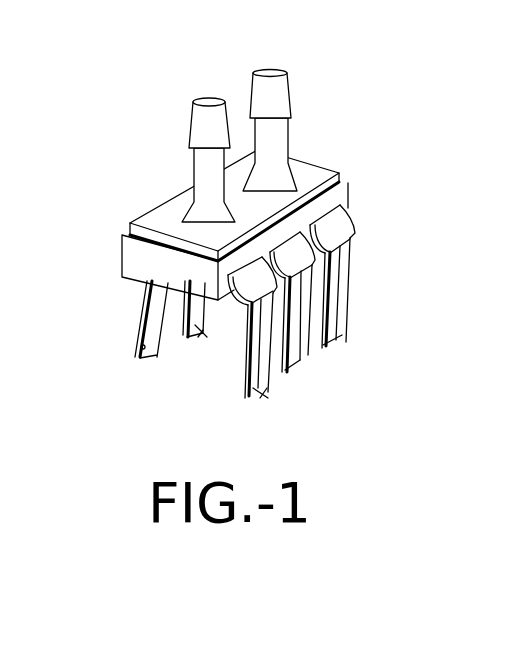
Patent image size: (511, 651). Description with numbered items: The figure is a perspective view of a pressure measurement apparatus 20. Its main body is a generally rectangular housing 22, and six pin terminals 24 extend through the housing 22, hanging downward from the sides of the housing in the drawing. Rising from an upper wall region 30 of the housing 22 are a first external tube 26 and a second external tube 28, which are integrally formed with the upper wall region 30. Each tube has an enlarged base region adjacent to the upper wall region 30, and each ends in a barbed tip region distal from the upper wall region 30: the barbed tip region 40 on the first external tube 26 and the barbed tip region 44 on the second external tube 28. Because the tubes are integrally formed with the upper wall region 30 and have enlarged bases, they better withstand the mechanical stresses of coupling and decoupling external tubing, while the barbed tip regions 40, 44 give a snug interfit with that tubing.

The pressure measurement apparatus 20 is at (429, 173).
The housing 22 is at (131, 224).
The pin terminals 24 is at (200, 331).
The first external tube 26 is at (284, 140).
The second external tube 28 is at (195, 165).
The upper wall region 30 is at (338, 173).
The barbed tip region 40 is at (289, 87).
The barbed tip region 44 is at (191, 118).